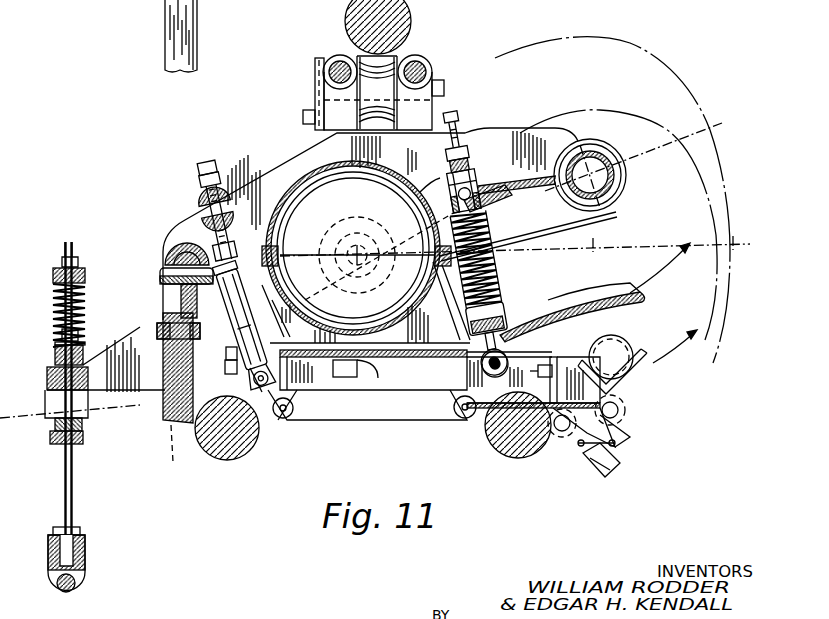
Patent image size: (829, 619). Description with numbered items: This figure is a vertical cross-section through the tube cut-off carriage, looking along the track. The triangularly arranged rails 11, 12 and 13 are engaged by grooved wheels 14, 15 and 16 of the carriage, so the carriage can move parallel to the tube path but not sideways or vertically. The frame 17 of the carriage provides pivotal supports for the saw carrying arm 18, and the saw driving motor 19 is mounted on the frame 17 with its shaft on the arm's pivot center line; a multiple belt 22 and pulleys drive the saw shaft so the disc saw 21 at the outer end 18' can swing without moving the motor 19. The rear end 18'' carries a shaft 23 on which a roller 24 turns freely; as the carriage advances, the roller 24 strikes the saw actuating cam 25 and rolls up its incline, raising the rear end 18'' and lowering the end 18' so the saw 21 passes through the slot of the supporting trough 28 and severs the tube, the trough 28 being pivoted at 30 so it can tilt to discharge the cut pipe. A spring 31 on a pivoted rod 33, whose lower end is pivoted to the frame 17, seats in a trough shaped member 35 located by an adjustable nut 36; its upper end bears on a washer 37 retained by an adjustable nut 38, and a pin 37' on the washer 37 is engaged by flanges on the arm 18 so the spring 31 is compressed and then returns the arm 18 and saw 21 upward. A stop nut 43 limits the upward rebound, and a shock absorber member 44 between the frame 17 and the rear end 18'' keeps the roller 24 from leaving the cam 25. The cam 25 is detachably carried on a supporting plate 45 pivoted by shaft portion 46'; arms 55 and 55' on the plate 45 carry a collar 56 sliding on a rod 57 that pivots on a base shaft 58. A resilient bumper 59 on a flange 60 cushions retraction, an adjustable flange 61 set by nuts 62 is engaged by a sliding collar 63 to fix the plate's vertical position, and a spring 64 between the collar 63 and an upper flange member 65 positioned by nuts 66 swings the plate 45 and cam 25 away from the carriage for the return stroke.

The rail 11 is at (405, 12).
The rail 12 is at (238, 32).
The rail 13 is at (240, 425).
The grooved wheel 14 is at (400, 62).
The grooved wheel 15 is at (478, 412).
The grooved wheel 16 is at (263, 412).
The frame 17 is at (403, 376).
The saw carrying arm 18 is at (289, 261).
The outer end of arm 18' is at (517, 152).
The rear end of arm 18'' is at (195, 211).
The saw driving motor 19 is at (326, 300).
The disc saw 21 is at (683, 78).
The multiple belt 22 is at (553, 222).
The shaft 23 is at (166, 266).
The roller 24 is at (189, 306).
The saw actuating cam 25 is at (158, 310).
The supporting trough 28 is at (635, 372).
The pivotal support of trough 30 is at (620, 410).
The spring 31 is at (505, 250).
The pivoted rod 33 is at (528, 330).
The trough shaped member 35 is at (502, 335).
The adjustable nut 36 is at (468, 338).
The washer 37 is at (444, 226).
The pin 37' is at (497, 199).
The adjustable nut 38 is at (471, 160).
The stop nut 43 is at (451, 112).
The shock absorber member 44 is at (240, 322).
The supporting plate 45 is at (228, 366).
The shaft portion 46' is at (183, 453).
The arm 55 is at (151, 36).
The arm 55' is at (155, 382).
The collar 56 is at (47, 380).
The rod 57 is at (74, 471).
The shaft 58 is at (78, 584).
The resilient bumper 59 is at (54, 426).
The flange 60 is at (52, 440).
The adjustable flange 61 is at (55, 344).
The nut 62 is at (57, 340).
The sliding collar 63 is at (54, 360).
The spring 64 is at (52, 304).
The upper flange member 65 is at (56, 272).
The nut 66 is at (70, 263).